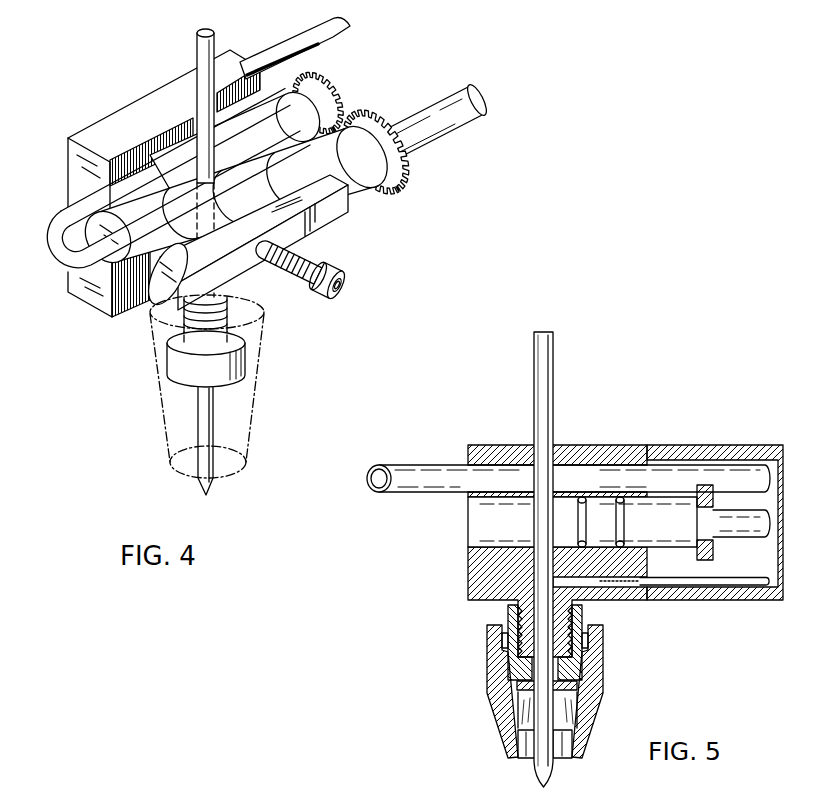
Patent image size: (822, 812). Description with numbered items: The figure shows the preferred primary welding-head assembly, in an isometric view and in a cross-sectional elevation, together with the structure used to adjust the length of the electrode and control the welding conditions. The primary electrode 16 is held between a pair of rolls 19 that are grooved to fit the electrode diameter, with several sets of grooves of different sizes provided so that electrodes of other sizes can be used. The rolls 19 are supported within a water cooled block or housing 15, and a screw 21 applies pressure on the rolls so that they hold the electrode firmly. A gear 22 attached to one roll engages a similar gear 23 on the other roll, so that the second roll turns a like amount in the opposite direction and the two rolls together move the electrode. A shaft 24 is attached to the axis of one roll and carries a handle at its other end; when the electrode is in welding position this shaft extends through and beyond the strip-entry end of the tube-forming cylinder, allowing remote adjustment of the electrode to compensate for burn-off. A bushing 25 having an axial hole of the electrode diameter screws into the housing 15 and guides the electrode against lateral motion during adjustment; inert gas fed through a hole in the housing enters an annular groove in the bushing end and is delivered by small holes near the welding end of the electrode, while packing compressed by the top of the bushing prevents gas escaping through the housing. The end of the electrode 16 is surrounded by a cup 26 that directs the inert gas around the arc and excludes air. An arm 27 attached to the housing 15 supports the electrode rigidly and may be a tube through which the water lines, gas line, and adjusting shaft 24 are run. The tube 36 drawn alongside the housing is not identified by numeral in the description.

In FIG. 4, the water cooled block 15 is at (103, 122).
In FIG. 5, the water cooled block 15 is at (583, 445).
In FIG. 4, the primary electrode 16 is at (212, 487).
In FIG. 5, the primary electrode 16 is at (553, 766).
In FIG. 4, the rolls 19 is at (270, 100).
In FIG. 5, the rolls 19 is at (475, 525).
In FIG. 4, the screw 21 is at (362, 287).
In FIG. 4, the gear 22 is at (403, 170).
In FIG. 5, the gear 22 is at (686, 482).
In FIG. 4, the gear 23 is at (320, 83).
In FIG. 4, the shaft 24 is at (470, 117).
In FIG. 5, the shaft 24 is at (731, 537).
In FIG. 4, the bushing 25 is at (245, 363).
In FIG. 5, the bushing 25 is at (584, 667).
In FIG. 4, the cup 26 is at (173, 430).
In FIG. 5, the cup 26 is at (497, 705).
In FIG. 4, the arm 27 is at (293, 41).
In FIG. 5, the arm 27 is at (690, 446).
In FIG. 4, the tube 36 is at (50, 250).
In FIG. 5, the tube 36 is at (410, 470).